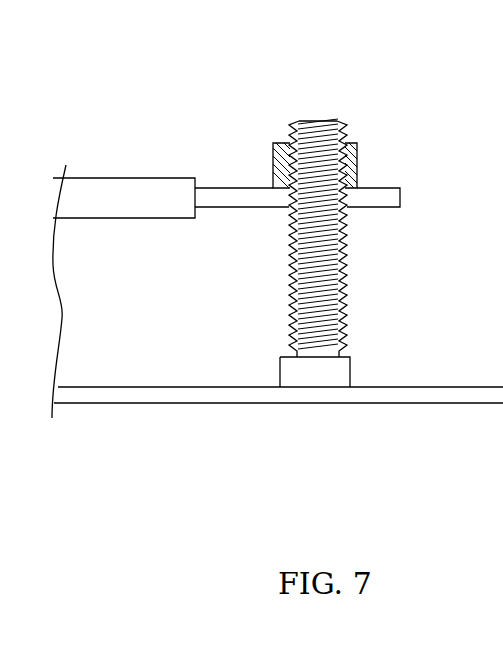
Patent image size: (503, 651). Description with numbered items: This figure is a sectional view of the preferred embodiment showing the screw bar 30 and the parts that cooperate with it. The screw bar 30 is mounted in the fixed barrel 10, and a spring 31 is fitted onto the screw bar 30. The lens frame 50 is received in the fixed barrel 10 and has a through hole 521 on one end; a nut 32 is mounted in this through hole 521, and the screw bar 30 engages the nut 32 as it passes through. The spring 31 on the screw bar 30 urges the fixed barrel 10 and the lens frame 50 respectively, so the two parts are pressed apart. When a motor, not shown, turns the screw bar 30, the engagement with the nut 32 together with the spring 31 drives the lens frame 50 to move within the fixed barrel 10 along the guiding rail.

The fixed barrel 10 is at (449, 394).
The screw bar 30 is at (364, 204).
The spring 31 is at (345, 270).
The nut 32 is at (357, 157).
The lens frame 50 is at (162, 192).
The through hole 521 is at (287, 204).